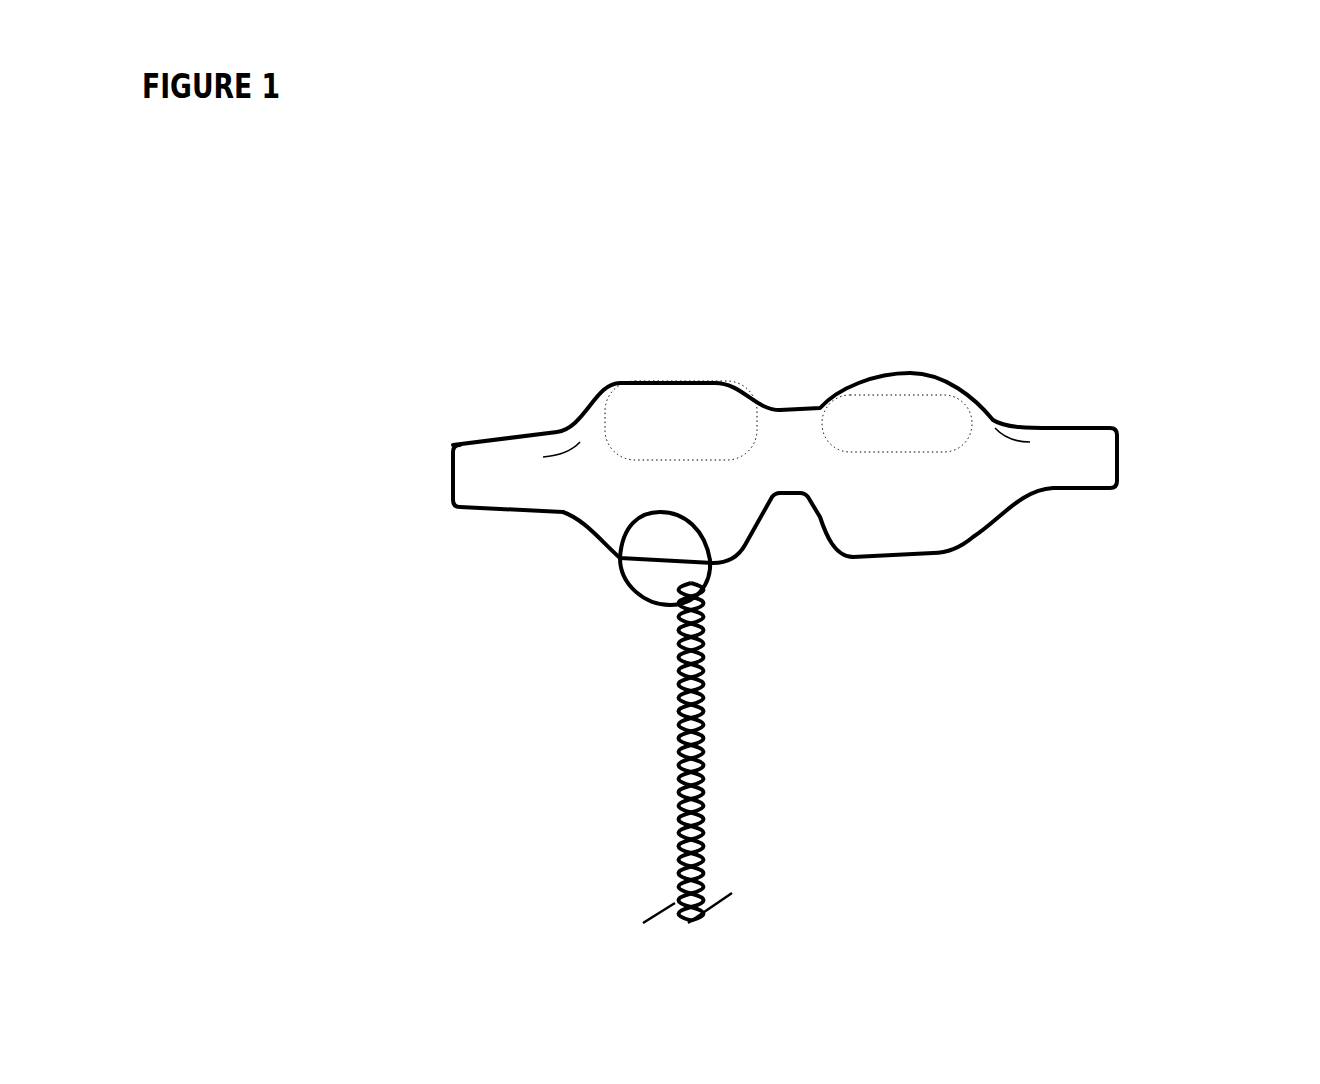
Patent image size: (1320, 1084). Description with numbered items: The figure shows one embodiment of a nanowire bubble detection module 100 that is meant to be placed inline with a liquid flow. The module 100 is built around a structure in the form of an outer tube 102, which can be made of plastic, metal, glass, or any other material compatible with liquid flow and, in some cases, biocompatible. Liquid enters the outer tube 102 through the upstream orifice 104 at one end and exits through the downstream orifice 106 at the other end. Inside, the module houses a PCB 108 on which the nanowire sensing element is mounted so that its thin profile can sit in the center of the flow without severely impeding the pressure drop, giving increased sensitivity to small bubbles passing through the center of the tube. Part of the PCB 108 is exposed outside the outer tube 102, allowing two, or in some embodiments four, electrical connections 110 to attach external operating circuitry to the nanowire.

The nanowire bubble detection module 100 is at (832, 175).
The outer tube 102 is at (847, 375).
The upstream orifice 104 is at (1122, 470).
The downstream orifice 106 is at (450, 492).
The PCB 108 is at (707, 583).
The electrical connections 110 is at (703, 765).